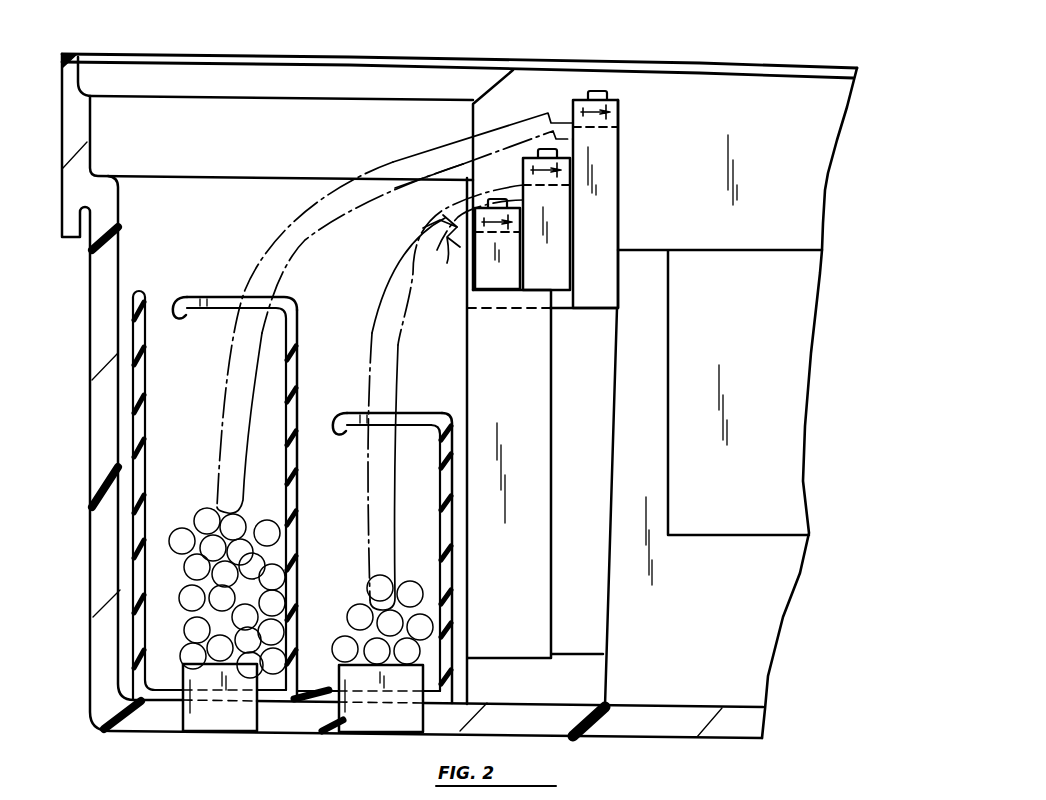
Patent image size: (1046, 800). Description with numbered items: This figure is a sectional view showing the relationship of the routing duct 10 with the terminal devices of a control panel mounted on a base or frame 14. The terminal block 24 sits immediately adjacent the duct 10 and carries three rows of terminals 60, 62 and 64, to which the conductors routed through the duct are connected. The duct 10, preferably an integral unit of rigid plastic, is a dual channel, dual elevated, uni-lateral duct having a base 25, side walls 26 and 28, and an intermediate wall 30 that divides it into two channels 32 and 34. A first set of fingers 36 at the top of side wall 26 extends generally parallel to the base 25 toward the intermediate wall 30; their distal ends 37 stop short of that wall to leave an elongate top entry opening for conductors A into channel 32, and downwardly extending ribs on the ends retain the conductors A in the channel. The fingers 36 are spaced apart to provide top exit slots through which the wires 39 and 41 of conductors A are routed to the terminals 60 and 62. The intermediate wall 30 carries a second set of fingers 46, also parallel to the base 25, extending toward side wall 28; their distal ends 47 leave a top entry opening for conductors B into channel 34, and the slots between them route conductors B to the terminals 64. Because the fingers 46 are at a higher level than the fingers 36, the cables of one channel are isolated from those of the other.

The duct 10 is at (133, 305).
The base or frame 14 is at (100, 727).
The terminal block 24 is at (574, 92).
The base 25 is at (288, 700).
The side wall 26 is at (452, 540).
The side wall 28 is at (120, 387).
The intermediate wall 30 is at (298, 325).
The channel 32 is at (354, 549).
The channel 34 is at (199, 484).
The first set of fingers 36 is at (417, 413).
The distal ends of fingers 37 is at (333, 428).
The wire 39 is at (460, 244).
The wire 41 is at (443, 215).
The second set of fingers 46 is at (222, 297).
The distal ends of fingers 47 is at (167, 287).
The terminals 60 is at (618, 202).
The terminals 62 is at (618, 144).
The terminals 64 is at (612, 93).
The conductors A is at (401, 252).
The conductors B is at (407, 156).